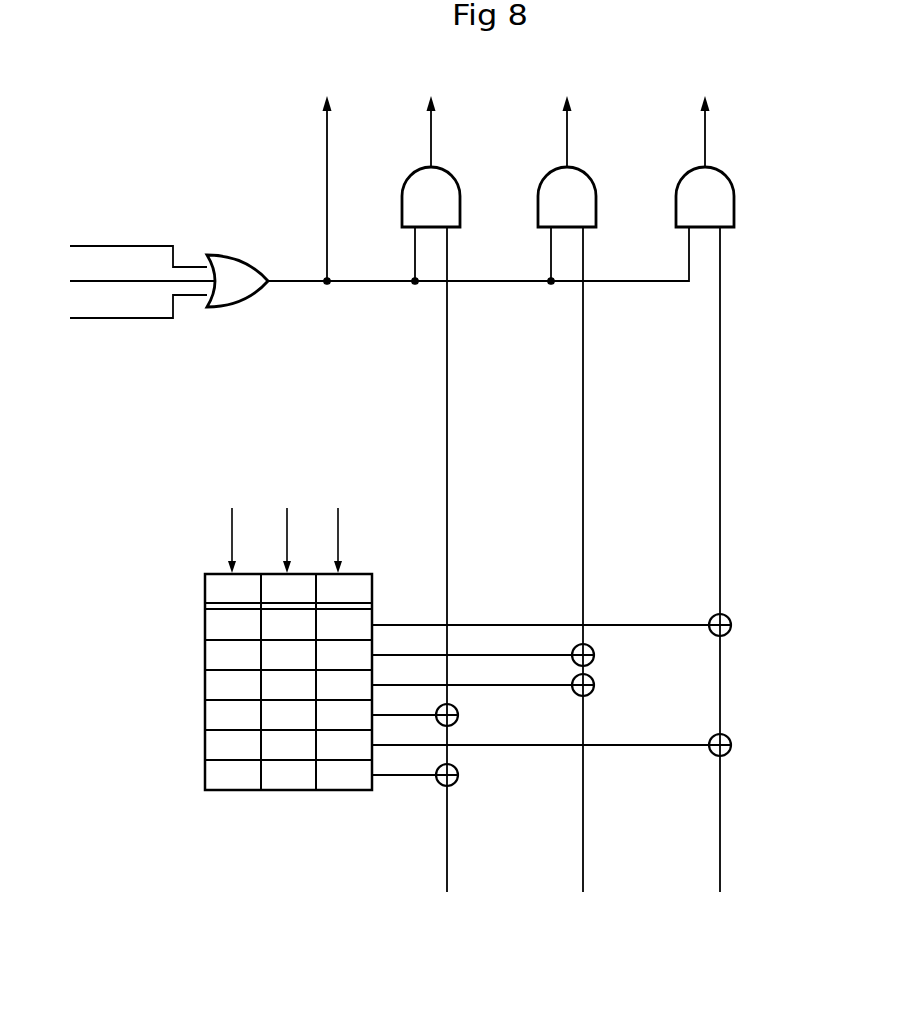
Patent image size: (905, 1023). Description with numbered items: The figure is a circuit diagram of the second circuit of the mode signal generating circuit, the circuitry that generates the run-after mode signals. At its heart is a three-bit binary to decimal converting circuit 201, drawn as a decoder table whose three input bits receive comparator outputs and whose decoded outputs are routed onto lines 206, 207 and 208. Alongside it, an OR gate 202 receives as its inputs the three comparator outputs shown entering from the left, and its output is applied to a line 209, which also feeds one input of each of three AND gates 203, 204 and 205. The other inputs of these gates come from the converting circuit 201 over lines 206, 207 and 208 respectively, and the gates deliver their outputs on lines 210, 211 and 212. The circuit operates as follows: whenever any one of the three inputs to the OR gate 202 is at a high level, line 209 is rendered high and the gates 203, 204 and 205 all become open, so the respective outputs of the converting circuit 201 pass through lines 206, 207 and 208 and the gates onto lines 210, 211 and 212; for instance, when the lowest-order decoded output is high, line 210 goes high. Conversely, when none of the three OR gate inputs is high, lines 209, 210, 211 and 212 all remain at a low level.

The binary to decimal converting circuit 201 is at (232, 790).
The OR gate 202 is at (228, 308).
The AND gate 203 is at (460, 217).
The AND gate 204 is at (596, 217).
The AND gate 205 is at (734, 217).
The line 206 is at (447, 560).
The line 207 is at (583, 560).
The line 208 is at (720, 560).
The line 209 is at (323, 182).
The line 210 is at (432, 135).
The line 211 is at (569, 135).
The line 212 is at (707, 135).